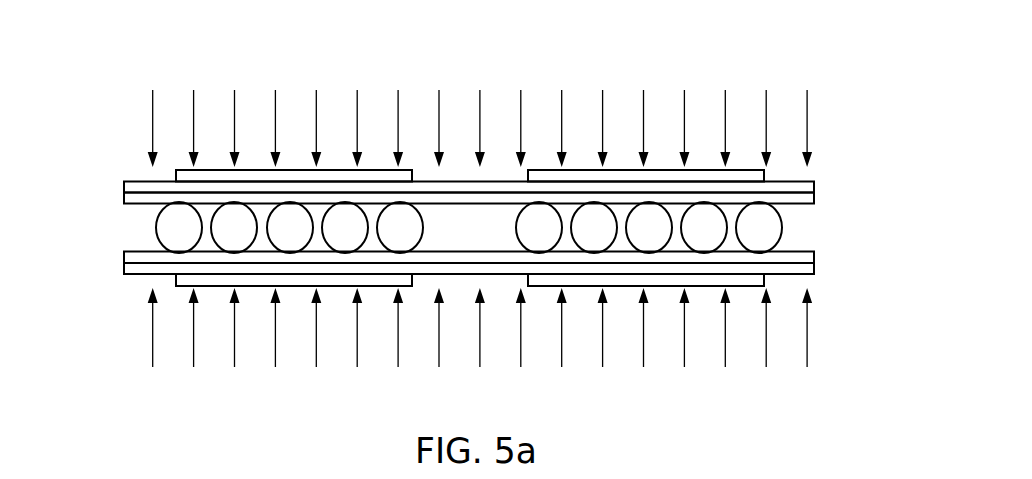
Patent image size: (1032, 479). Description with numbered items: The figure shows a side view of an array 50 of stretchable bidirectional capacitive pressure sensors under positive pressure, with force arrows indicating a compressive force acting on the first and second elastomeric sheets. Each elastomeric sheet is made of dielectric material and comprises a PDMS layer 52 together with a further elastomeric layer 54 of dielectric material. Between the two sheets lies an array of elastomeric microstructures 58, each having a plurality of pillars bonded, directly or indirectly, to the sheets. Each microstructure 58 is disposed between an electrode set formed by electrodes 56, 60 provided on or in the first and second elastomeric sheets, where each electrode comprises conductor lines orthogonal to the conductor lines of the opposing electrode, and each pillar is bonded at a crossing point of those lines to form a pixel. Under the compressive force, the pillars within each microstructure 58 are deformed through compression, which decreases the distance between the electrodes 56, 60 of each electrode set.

The array 50 is at (114, 138).
The PDMS layer 52 is at (816, 198).
The further elastomeric layer 54 is at (815, 182).
The electrode 56 is at (743, 170).
The microstructure 58 is at (168, 226).
The electrode 60 is at (294, 170).